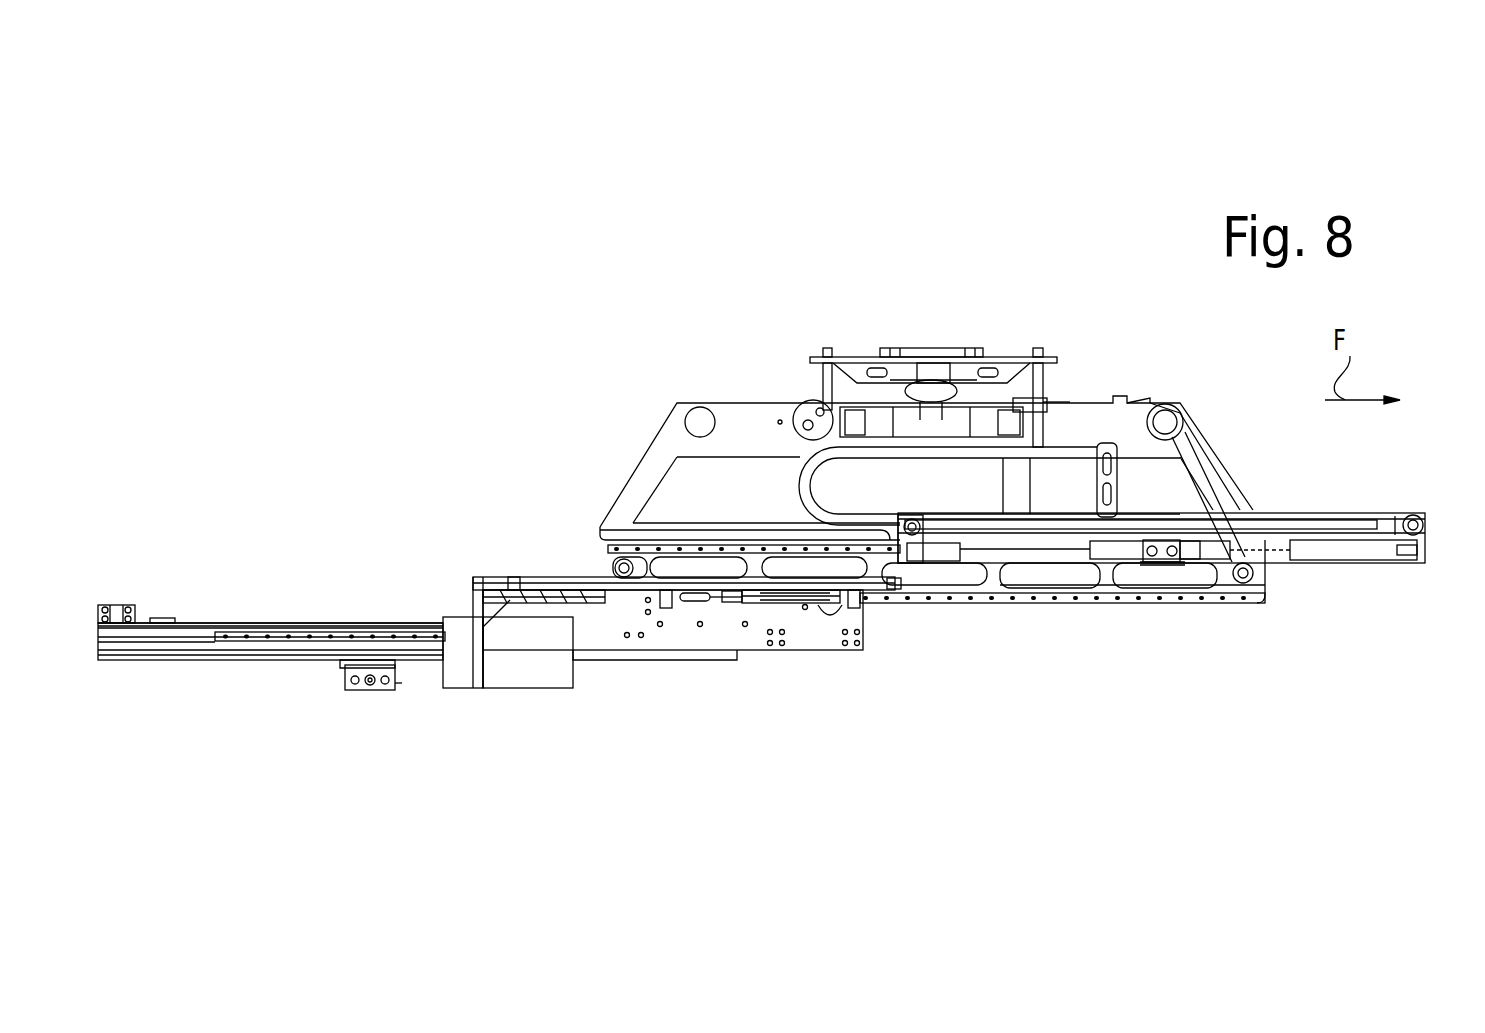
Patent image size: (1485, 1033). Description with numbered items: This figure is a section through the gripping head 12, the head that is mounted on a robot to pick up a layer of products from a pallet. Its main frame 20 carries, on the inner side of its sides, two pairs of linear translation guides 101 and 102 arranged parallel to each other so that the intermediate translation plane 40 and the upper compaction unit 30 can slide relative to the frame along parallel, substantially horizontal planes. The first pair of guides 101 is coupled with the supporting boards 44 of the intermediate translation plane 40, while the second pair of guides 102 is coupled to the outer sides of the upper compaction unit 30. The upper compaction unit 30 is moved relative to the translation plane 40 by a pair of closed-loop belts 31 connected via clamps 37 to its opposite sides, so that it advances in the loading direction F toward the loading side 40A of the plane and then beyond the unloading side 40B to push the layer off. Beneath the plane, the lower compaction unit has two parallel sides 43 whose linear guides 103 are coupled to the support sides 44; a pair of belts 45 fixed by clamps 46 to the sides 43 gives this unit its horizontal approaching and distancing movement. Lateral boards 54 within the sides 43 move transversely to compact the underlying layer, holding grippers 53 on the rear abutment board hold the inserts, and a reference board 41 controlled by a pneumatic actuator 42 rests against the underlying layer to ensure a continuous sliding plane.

The gripping head 12 is at (1243, 368).
The main frame 20 is at (745, 415).
The upper compaction unit 30 is at (1418, 511).
The belts 31 is at (1198, 458).
The clamps 37 is at (1171, 575).
The intermediate translation plane 40 is at (560, 577).
The loading side 40A is at (471, 580).
The unloading side 40B is at (895, 586).
The reference board 41 is at (472, 680).
The pneumatic actuator 42 is at (790, 606).
The sides 43 is at (243, 653).
The supporting boards 44 is at (690, 640).
The belts 45 is at (190, 624).
The clamps 46 is at (158, 618).
The holding grippers 53 is at (112, 605).
The lateral boards 54 is at (539, 672).
The linear translation guides 101 is at (1068, 600).
The linear translation guides 102 is at (630, 548).
The linear translation guides 103 is at (318, 635).